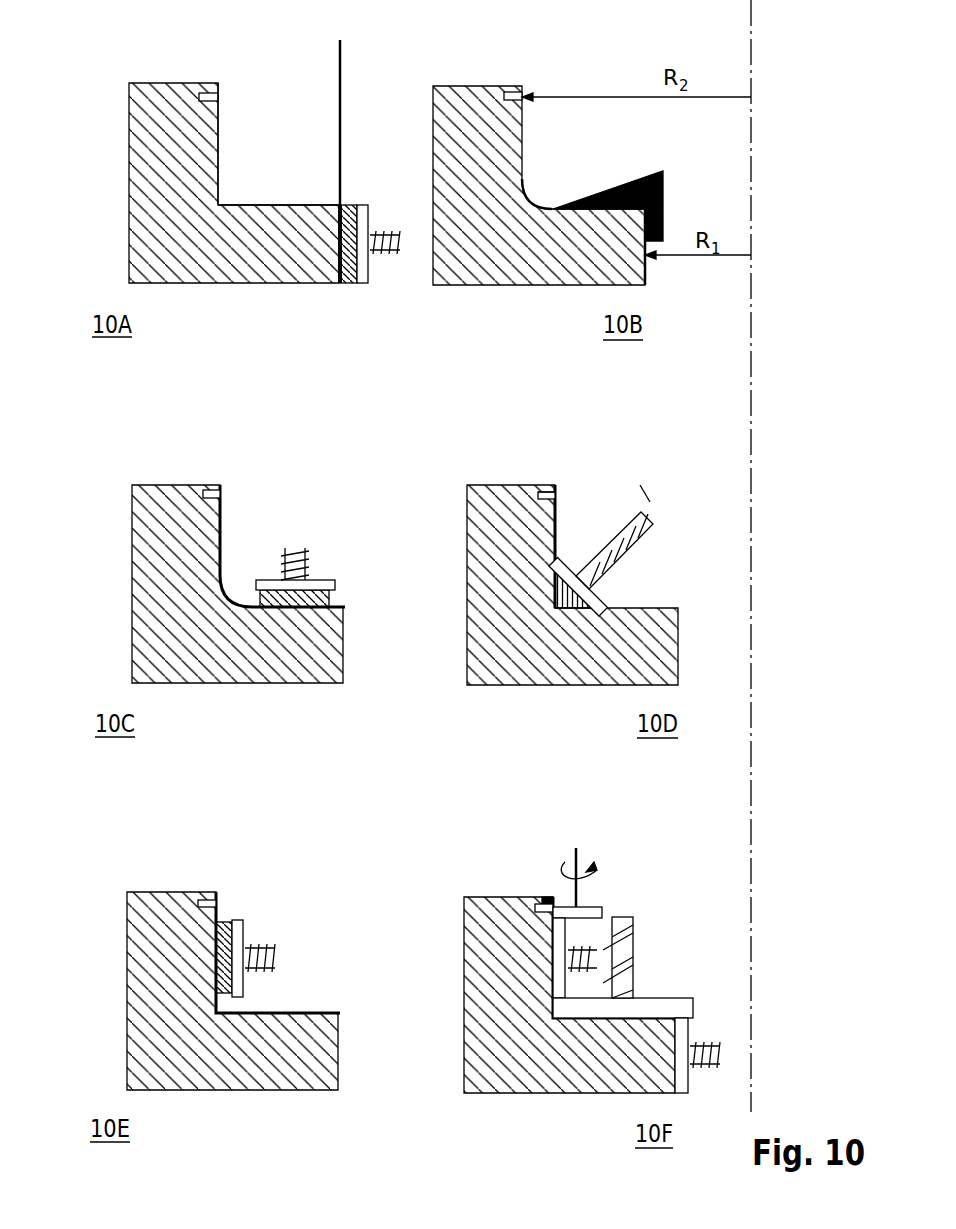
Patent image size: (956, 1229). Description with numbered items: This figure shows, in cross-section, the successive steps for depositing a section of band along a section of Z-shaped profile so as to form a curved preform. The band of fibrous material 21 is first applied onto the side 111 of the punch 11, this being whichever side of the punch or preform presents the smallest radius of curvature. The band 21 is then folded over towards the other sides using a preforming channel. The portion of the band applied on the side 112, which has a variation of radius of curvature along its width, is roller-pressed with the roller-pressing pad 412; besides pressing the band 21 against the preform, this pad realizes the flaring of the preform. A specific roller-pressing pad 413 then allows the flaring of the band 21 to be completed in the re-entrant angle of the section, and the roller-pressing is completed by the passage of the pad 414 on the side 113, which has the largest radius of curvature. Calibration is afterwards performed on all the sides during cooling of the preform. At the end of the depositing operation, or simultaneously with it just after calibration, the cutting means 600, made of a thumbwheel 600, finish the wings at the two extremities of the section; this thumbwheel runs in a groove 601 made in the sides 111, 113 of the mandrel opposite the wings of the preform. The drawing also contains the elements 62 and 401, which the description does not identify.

The punch 11 is at (129, 208).
The band of fibrous material 21 is at (340, 58).
The adhesive fillet wedge 62 is at (641, 177).
The side of the punch with the smallest radius of curvature 111 is at (343, 243).
The side with a variation of radius of curvature along its width 112 is at (257, 206).
The side with the largest radius of curvature 113 is at (218, 115).
The clamping plate 401 is at (361, 278).
The roller-pressing pad 412 is at (319, 580).
The specific roller-pressing pad 413 is at (606, 577).
The pad 414 is at (245, 932).
The cutting means (thumbwheel) 600 is at (602, 893).
The groove 601 is at (548, 492).